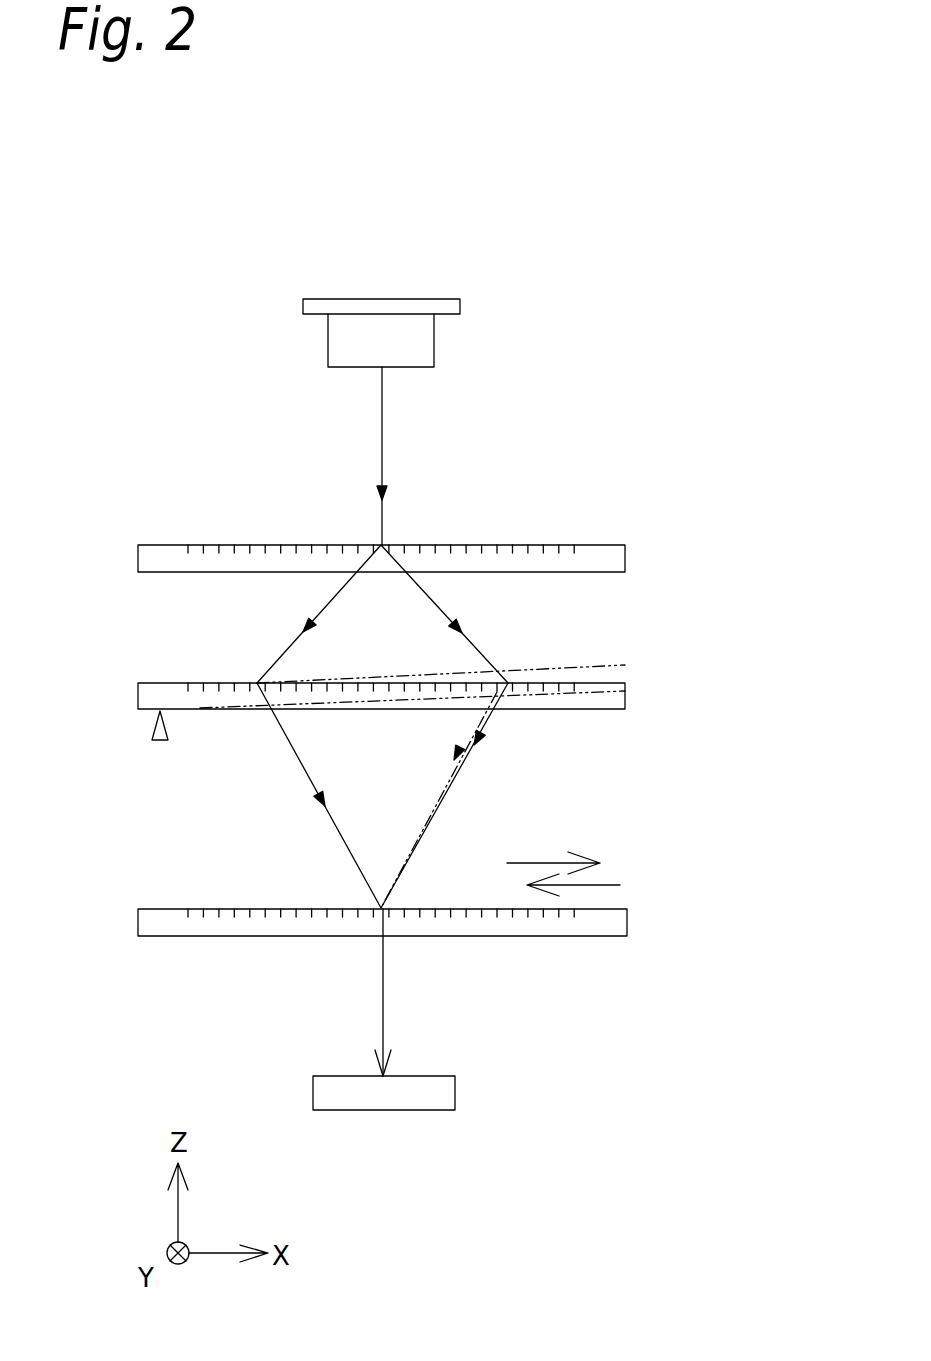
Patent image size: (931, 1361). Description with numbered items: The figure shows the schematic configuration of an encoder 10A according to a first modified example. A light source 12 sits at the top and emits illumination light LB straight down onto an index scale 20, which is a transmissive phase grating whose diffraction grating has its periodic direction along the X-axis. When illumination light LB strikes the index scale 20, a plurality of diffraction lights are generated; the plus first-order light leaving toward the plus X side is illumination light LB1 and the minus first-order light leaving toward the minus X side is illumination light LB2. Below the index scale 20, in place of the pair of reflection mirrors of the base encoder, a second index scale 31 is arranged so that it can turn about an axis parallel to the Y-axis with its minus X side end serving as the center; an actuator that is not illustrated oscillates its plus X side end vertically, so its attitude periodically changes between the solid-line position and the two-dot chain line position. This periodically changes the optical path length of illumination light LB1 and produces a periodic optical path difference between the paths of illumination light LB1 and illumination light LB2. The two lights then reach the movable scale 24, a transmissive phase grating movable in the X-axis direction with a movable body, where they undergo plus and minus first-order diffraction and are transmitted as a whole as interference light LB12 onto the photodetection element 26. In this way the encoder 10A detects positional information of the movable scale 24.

The encoder 10A is at (562, 178).
The light source 12 is at (405, 300).
The illumination light LB is at (382, 413).
The index scale 20 is at (627, 560).
The second index scale 31 is at (627, 698).
The illumination light LB1 is at (458, 778).
The illumination light LB2 is at (303, 772).
The movable scale 24 is at (627, 910).
The interference light LB12 is at (383, 973).
The photodetection element 26 is at (455, 1092).